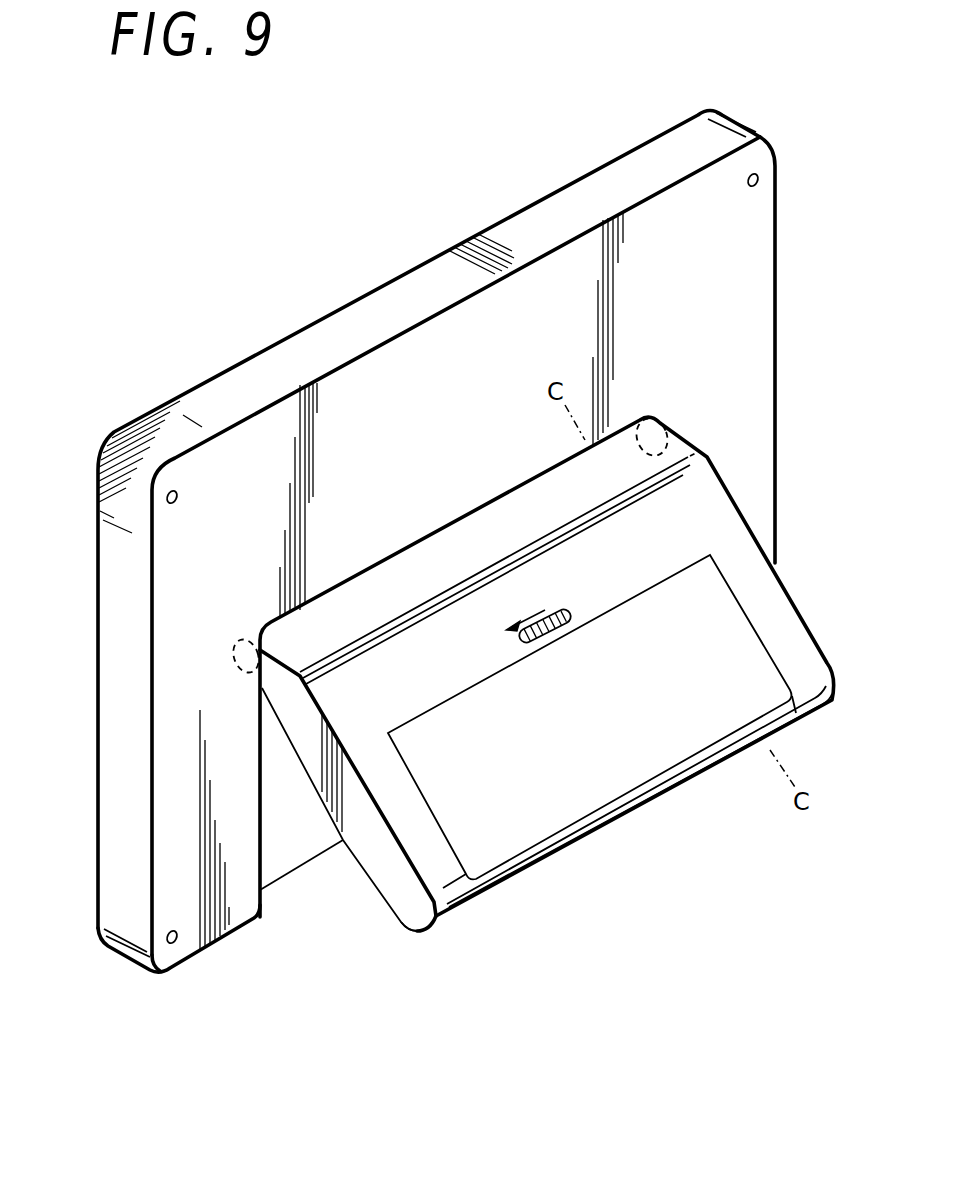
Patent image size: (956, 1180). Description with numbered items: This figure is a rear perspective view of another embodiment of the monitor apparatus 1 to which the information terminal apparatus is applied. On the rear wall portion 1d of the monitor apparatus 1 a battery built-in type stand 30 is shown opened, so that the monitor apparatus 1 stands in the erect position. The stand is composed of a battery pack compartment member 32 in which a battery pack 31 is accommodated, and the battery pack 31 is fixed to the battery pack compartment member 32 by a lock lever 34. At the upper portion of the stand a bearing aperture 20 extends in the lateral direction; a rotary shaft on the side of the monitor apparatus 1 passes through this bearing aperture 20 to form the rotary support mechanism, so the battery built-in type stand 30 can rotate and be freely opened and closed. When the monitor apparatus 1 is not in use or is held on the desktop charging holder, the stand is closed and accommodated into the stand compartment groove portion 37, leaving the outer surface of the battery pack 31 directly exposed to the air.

The monitor apparatus 1 is at (387, 300).
The rear wall portion 1d is at (184, 537).
The bearing aperture 20 is at (235, 654).
The battery built-in type stand 30 is at (695, 728).
The battery pack 31 is at (568, 805).
The battery pack compartment member 32 is at (448, 895).
The lock lever 34 is at (562, 612).
The stand compartment groove portion 37 is at (330, 873).